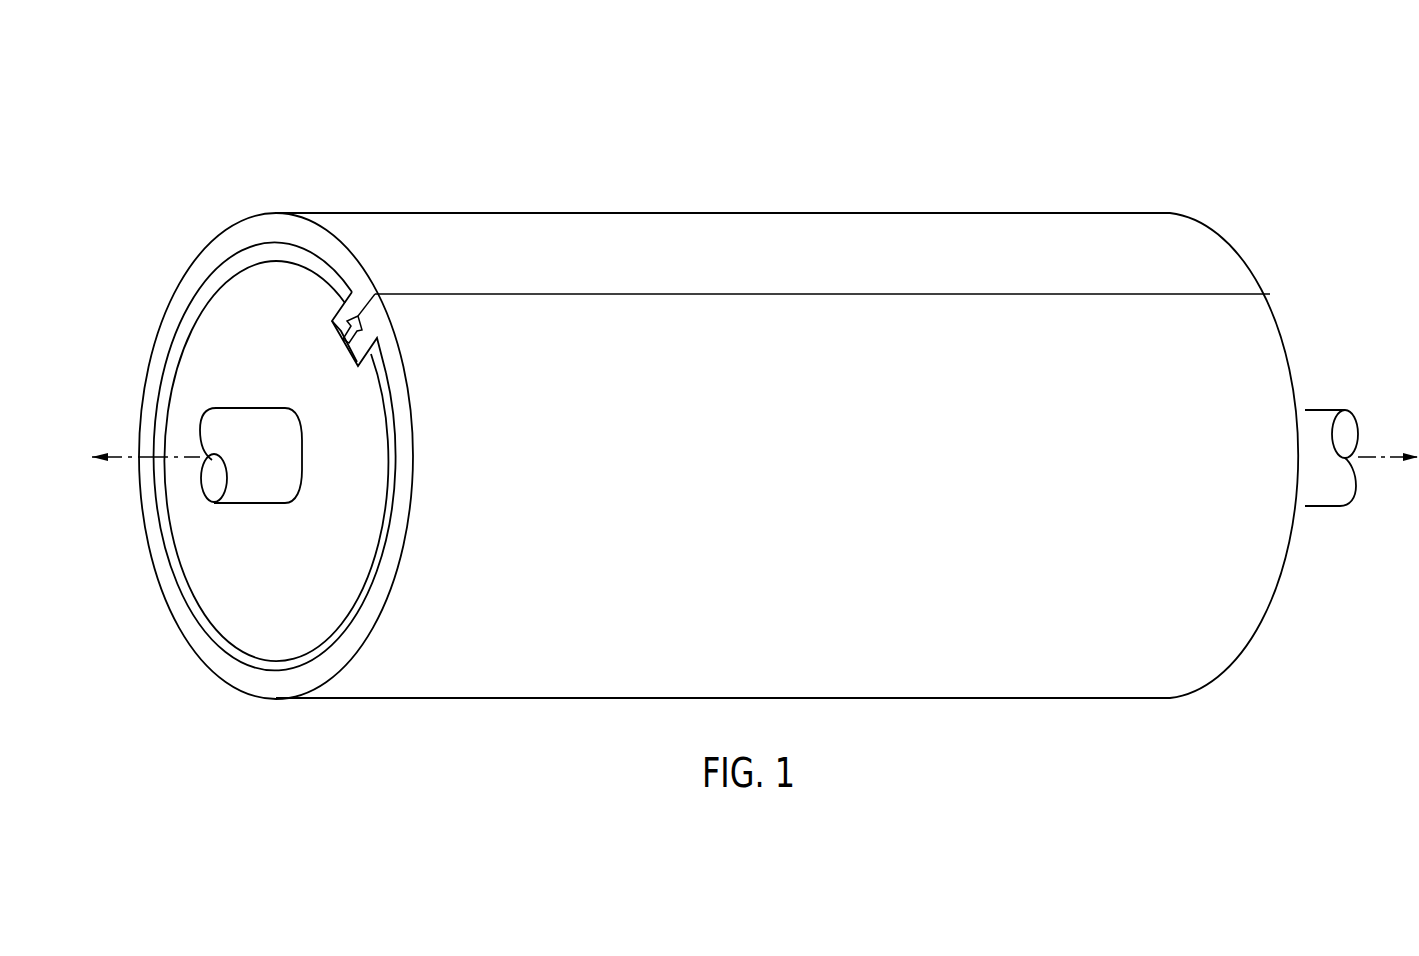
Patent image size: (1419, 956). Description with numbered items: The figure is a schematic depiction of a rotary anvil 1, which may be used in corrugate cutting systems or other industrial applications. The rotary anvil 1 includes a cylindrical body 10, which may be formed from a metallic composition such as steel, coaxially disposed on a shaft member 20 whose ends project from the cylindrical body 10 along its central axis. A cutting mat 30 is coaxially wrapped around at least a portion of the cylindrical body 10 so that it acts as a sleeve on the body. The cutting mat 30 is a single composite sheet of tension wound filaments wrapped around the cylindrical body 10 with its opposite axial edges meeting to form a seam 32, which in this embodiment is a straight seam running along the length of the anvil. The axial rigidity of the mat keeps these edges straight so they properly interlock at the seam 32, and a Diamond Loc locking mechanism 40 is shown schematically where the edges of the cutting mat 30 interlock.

The rotary anvil 1 is at (1080, 170).
The cylindrical body 10 is at (273, 628).
The shaft member 20 is at (233, 426).
The cutting mat 30 is at (593, 234).
The seam 32 is at (1189, 294).
The Diamond Loc locking mechanism 40 is at (312, 315).